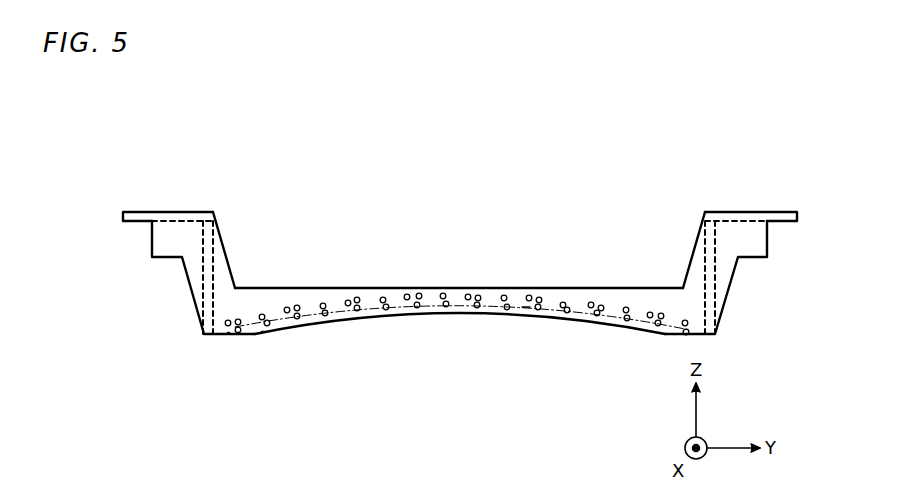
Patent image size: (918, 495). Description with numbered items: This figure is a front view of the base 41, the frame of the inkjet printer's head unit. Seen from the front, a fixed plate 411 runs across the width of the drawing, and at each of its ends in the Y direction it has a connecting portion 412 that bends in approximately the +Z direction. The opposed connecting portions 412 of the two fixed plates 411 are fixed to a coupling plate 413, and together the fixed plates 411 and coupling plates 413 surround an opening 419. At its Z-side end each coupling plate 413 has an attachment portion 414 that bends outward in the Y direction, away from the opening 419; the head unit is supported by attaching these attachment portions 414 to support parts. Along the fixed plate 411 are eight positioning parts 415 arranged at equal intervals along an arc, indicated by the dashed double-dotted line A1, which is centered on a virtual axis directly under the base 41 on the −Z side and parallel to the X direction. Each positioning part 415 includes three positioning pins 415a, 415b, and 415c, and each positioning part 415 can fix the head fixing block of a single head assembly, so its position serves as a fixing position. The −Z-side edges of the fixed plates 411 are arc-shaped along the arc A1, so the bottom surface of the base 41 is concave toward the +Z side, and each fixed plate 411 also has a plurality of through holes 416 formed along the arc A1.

The base 41 is at (364, 148).
The fixed plate 411 is at (583, 296).
The connecting portion 412 is at (185, 221).
The coupling plate 413 is at (198, 277).
The attachment portion 414 is at (131, 212).
The positioning part 415 is at (313, 321).
The positioning pin 415a is at (238, 335).
The positioning pin 415b is at (263, 330).
The positioning pin 415c is at (229, 334).
The through hole 416 is at (237, 317).
The opening 419 is at (517, 297).
The arc A1 is at (526, 307).